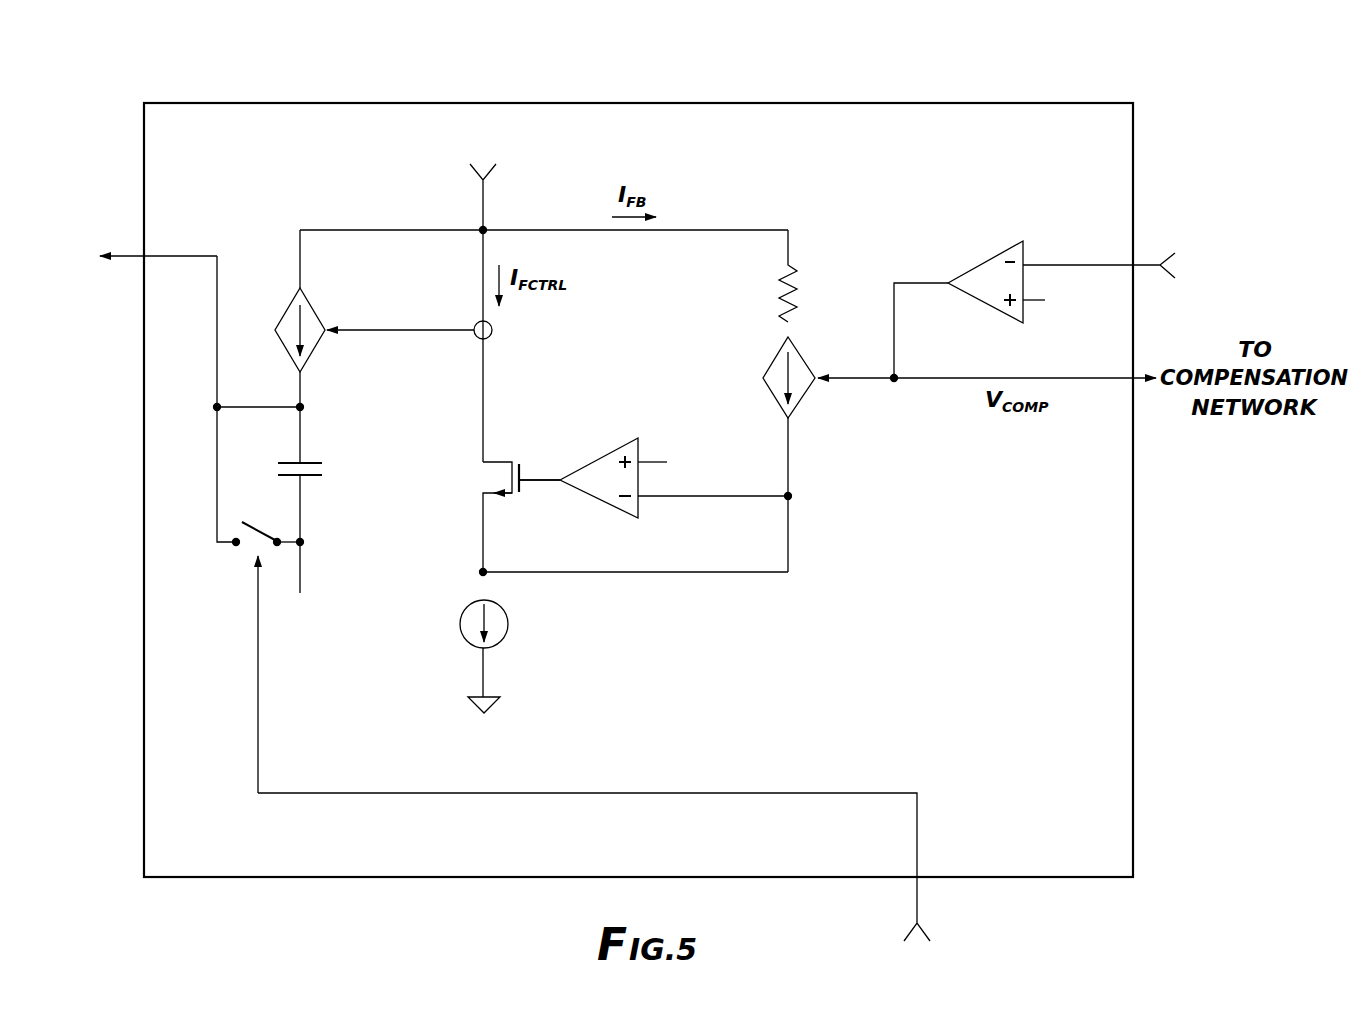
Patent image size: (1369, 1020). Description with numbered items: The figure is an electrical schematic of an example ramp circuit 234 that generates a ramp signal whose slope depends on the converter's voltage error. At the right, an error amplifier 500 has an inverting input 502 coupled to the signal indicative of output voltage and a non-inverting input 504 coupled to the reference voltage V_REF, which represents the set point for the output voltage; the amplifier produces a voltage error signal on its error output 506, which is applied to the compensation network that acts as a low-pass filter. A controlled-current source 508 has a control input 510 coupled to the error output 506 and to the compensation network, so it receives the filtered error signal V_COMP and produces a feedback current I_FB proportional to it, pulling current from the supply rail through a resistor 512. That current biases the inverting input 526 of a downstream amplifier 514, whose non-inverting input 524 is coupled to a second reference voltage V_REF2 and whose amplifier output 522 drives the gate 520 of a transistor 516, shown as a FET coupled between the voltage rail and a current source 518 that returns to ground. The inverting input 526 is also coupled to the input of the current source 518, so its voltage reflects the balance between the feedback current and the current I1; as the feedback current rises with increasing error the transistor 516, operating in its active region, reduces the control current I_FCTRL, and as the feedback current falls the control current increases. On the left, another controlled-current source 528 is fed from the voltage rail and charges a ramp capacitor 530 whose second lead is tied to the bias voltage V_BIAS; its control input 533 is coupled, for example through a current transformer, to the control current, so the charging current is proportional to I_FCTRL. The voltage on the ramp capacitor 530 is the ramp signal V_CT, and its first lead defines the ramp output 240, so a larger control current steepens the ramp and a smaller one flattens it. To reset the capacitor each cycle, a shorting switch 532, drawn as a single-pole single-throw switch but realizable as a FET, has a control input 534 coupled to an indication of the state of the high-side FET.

The ramp circuit 234 is at (136, 88).
The ramp output 240 is at (148, 253).
The error amplifier 500 is at (1053, 269).
The inverting input 502 is at (1030, 260).
The non-inverting input 504 is at (1028, 312).
The error output 506 is at (948, 280).
The controlled-current source 508 is at (820, 400).
The control input 510 is at (820, 375).
The resistor 512 is at (770, 295).
The amplifier 514 is at (648, 456).
The transistor 516 is at (528, 464).
The current source 518 is at (509, 640).
The gate 520 is at (531, 463).
The amplifier output 522 is at (560, 484).
The non-inverting input 524 is at (647, 453).
The inverting input 526 is at (640, 500).
The controlled-current source 528 is at (330, 296).
The ramp capacitor 530 is at (312, 462).
The shorting switch 532 is at (236, 556).
The control input 533 is at (326, 332).
The control input 534 is at (258, 604).